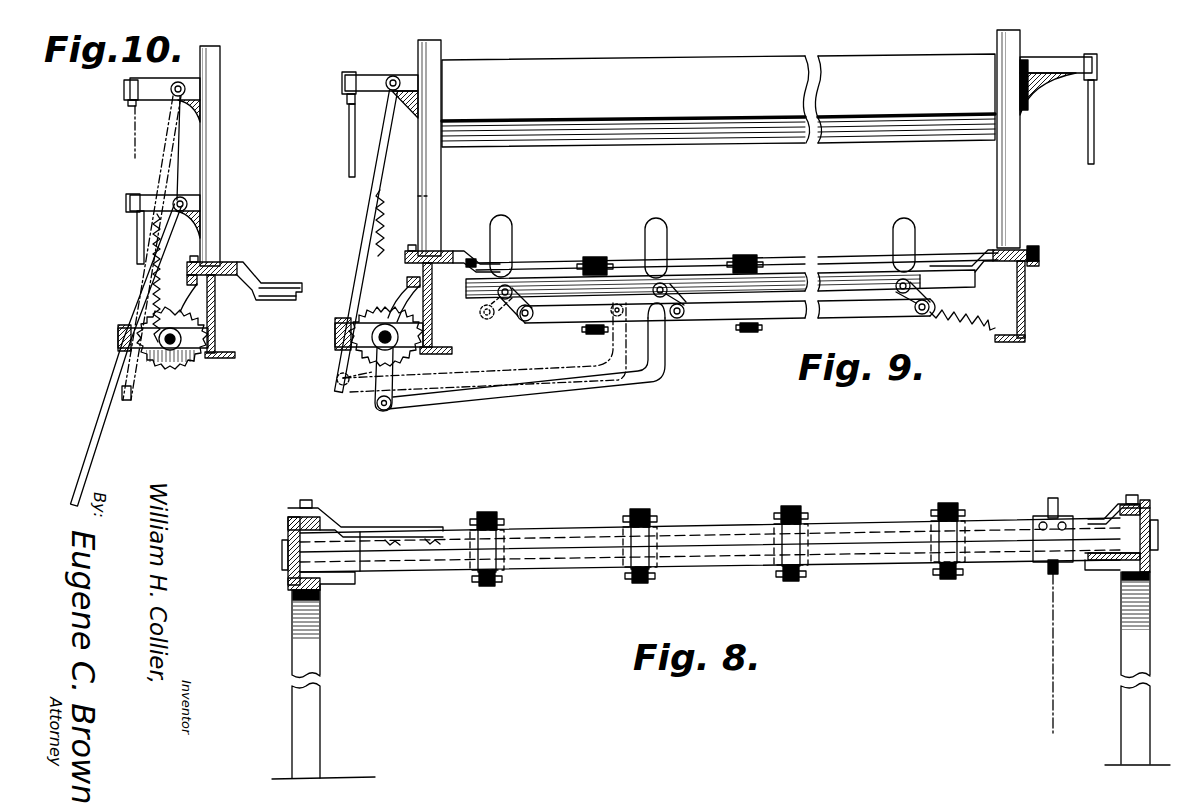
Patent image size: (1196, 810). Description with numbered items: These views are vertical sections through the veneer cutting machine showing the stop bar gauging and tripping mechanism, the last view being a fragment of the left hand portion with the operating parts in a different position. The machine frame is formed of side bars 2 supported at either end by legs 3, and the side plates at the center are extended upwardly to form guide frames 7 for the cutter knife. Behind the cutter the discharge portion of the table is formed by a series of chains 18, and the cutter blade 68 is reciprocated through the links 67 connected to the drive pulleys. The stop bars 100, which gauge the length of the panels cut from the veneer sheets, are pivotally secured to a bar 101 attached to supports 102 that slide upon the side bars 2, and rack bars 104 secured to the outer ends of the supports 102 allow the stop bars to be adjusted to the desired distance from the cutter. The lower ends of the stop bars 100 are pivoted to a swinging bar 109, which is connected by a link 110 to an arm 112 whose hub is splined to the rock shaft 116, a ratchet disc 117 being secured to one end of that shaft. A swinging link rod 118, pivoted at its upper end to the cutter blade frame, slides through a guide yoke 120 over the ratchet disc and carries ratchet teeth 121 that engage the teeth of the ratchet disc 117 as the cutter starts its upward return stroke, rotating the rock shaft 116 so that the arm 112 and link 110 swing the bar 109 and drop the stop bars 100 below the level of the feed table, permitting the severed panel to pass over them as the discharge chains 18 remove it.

In FIG. 10, the side bars 2 is at (216, 333).
In FIG. 9, the side bars 2 is at (433, 311).
In FIG. 8, the side bars 2 is at (288, 578).
In FIG. 8, the legs 3 is at (322, 702).
In FIG. 10, the guide frames 7 is at (210, 156).
In FIG. 9, the guide frames 7 is at (441, 181).
In FIG. 9, the chains 18 is at (593, 257).
In FIG. 8, the chains 18 is at (490, 514).
In FIG. 10, the links 67 is at (136, 222).
In FIG. 9, the links 67 is at (349, 157).
In FIG. 9, the cutter blade 68 is at (590, 147).
In FIG. 9, the stop bars 100 is at (668, 237).
In FIG. 9, the bar 101 is at (720, 284).
In FIG. 8, the bar 101 is at (710, 545).
In FIG. 10, the supports 102 is at (243, 266).
In FIG. 9, the supports 102 is at (440, 260).
In FIG. 8, the supports 102 is at (325, 520).
In FIG. 10, the rack bars 104 is at (196, 283).
In FIG. 9, the rack bars 104 is at (408, 279).
In FIG. 9, the swinging bar 109 is at (712, 318).
In FIG. 9, the link 110 is at (630, 390).
In FIG. 9, the arm 112 is at (378, 407).
In FIG. 9, the rock shaft 116 is at (402, 334).
In FIG. 10, the ratchet disc 117 is at (170, 368).
In FIG. 9, the ratchet disc 117 is at (370, 302).
In FIG. 10, the swinging link rod 118 is at (158, 175).
In FIG. 9, the swinging link rod 118 is at (376, 200).
In FIG. 10, the guide yoke 120 is at (118, 338).
In FIG. 9, the guide yoke 120 is at (335, 334).
In FIG. 9, the ratchet teeth 121 is at (382, 224).